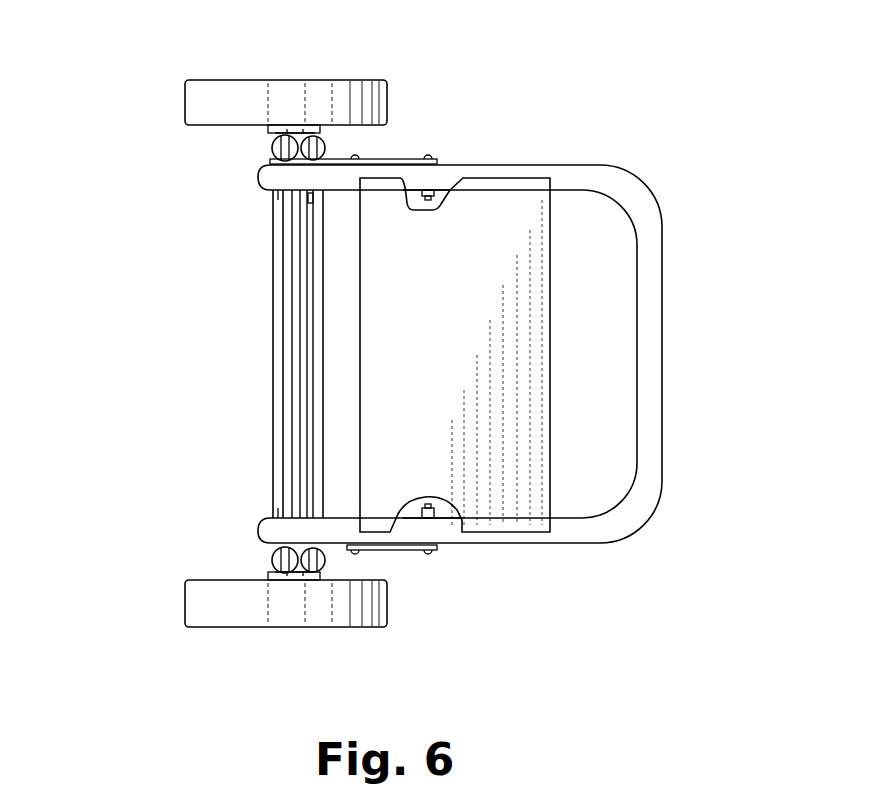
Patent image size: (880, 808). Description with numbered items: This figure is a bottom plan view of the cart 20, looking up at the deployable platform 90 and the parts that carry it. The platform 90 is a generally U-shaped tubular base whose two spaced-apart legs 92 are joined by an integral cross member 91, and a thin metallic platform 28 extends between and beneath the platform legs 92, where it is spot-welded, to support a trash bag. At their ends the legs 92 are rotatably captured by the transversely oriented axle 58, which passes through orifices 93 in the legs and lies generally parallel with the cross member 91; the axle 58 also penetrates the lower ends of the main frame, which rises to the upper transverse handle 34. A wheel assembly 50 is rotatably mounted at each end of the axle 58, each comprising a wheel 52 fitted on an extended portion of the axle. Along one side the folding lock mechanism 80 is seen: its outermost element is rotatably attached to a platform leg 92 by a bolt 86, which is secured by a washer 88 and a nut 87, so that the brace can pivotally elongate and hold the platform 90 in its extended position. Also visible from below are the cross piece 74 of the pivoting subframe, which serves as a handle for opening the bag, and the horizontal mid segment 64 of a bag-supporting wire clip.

The cart 20 is at (665, 95).
The platform 28 is at (462, 230).
The handle 34 is at (275, 297).
The wheel assembly 50 is at (170, 123).
The wheel 52 is at (210, 97).
The axle 58 is at (290, 150).
The mid segment 64 is at (313, 305).
The cross piece 74 is at (325, 272).
The folding lock mechanism 80 is at (390, 152).
The bolt 86 is at (428, 160).
The nut 87 is at (434, 522).
The washer 88 is at (440, 550).
The platform 90 is at (678, 350).
The cross member 91 is at (650, 403).
The legs 92 is at (565, 172).
The orifices 93 is at (278, 200).